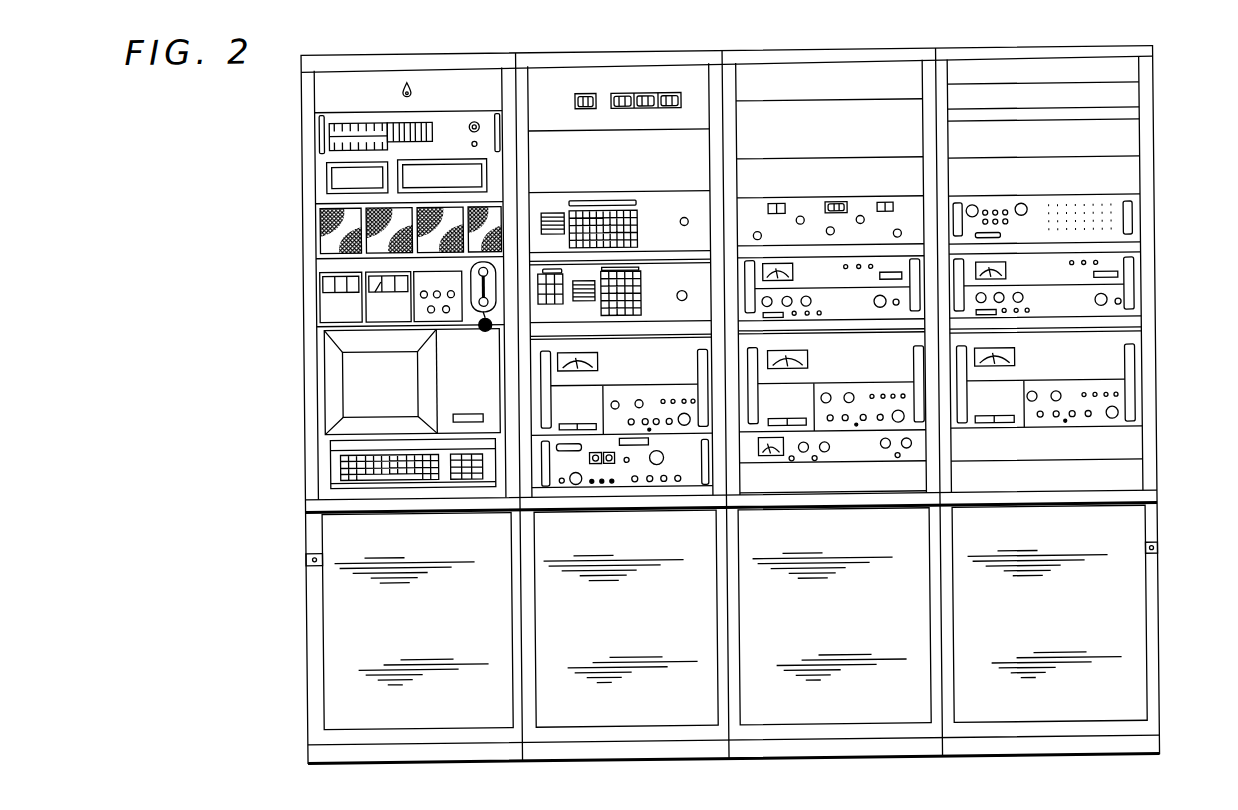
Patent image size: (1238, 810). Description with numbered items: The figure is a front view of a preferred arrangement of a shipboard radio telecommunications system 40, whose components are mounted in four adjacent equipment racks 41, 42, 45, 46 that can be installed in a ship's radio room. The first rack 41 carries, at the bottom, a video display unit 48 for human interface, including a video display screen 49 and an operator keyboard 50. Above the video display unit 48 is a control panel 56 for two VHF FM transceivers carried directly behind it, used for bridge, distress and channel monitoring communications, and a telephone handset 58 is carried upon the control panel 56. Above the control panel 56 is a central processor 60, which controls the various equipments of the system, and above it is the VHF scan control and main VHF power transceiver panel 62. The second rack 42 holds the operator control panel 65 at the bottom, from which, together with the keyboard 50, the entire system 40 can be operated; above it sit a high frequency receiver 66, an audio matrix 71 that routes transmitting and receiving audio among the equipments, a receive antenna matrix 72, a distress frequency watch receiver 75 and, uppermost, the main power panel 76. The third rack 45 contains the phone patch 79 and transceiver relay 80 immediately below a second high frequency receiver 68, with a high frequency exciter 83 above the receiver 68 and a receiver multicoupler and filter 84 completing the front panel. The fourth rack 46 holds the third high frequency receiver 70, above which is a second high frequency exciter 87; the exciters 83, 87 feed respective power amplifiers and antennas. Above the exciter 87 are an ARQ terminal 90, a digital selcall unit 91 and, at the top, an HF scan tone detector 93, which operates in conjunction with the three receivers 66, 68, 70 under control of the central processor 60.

The radio telecommunications system 40 is at (226, 232).
The first equipment rack 41 is at (417, 736).
The second equipment rack 42 is at (621, 738).
The third equipment rack 45 is at (821, 740).
The fourth equipment rack 46 is at (1036, 734).
The video display unit 48 is at (377, 385).
The video display screen 49 is at (350, 385).
The operator keyboard 50 is at (340, 462).
The control panel 56 is at (379, 278).
The telephone handset 58 is at (478, 305).
The central processor 60 is at (329, 166).
The VHF scan control and main VHF power transceiver panel 62 is at (323, 82).
The operator control panel 65 is at (688, 479).
The high frequency receiver 66 is at (649, 366).
The high frequency receiver 68 is at (846, 367).
The high frequency receiver 70 is at (1078, 361).
The audio matrix 71 is at (675, 291).
The receive antenna matrix 72 is at (672, 228).
The distress frequency watch receiver 75 is at (631, 167).
The main power panel 76 is at (564, 99).
The phone patch 79 is at (844, 456).
The transceiver relay 80 is at (871, 481).
The high frequency exciter 83 is at (864, 309).
The receiver multicoupler and filter 84 is at (854, 206).
The second high frequency exciter 87 is at (1087, 297).
The ARQ terminal 90 is at (1140, 219).
The digital selcall unit 91 is at (1130, 144).
The HF scan tone detector 93 is at (1119, 114).